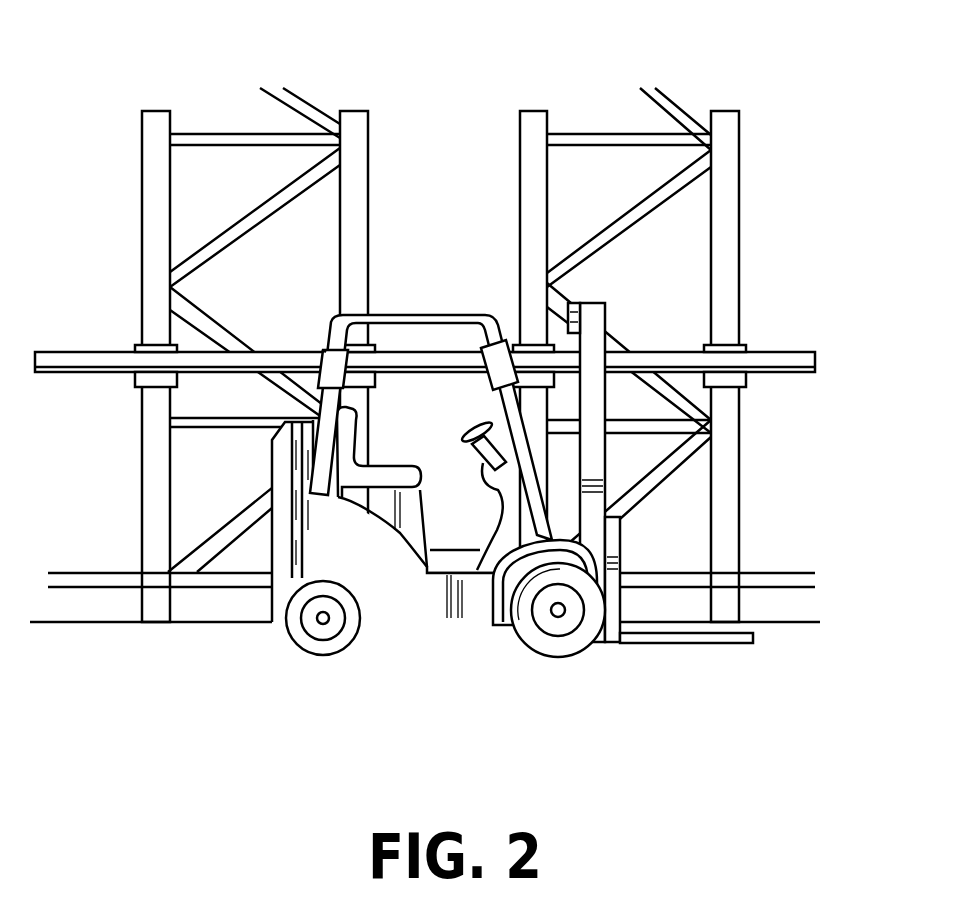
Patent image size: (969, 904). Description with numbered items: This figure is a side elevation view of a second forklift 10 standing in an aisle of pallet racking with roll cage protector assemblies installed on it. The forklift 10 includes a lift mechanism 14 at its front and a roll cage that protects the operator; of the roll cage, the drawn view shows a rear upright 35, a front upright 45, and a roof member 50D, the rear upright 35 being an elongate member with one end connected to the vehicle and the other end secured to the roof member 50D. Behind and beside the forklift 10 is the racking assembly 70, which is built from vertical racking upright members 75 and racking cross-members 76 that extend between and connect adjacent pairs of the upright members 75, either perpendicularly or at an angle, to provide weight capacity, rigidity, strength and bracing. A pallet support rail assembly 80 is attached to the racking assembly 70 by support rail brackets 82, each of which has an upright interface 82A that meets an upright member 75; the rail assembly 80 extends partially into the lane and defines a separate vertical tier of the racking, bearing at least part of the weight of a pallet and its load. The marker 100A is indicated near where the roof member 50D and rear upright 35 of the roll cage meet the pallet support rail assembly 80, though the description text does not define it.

The forklift 10 is at (501, 481).
The lift mechanism 14 is at (722, 643).
The rear upright 35 is at (327, 497).
The front upright 45 is at (540, 522).
The roof member 50D is at (449, 320).
The racking assembly 70 is at (448, 311).
The racking upright members 75 is at (157, 162).
The racking cross-members 76 is at (635, 215).
The pallet support rail assembly 80 is at (448, 363).
The support rail brackets 82 is at (135, 352).
The upright interface 82A is at (157, 377).
The guard contact point 100A is at (322, 350).